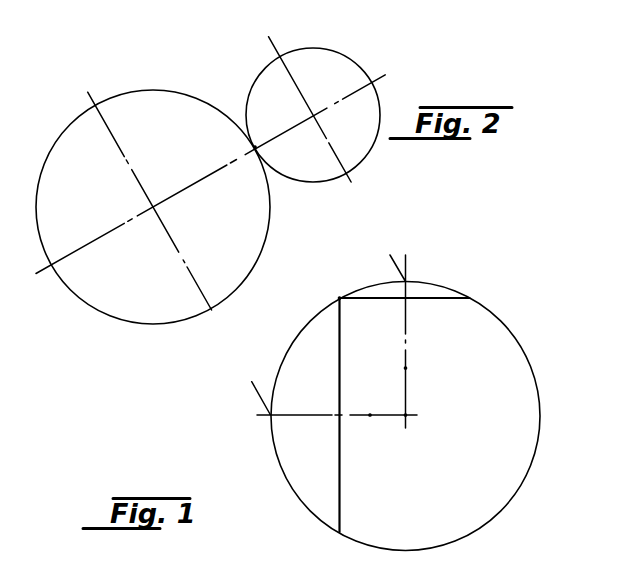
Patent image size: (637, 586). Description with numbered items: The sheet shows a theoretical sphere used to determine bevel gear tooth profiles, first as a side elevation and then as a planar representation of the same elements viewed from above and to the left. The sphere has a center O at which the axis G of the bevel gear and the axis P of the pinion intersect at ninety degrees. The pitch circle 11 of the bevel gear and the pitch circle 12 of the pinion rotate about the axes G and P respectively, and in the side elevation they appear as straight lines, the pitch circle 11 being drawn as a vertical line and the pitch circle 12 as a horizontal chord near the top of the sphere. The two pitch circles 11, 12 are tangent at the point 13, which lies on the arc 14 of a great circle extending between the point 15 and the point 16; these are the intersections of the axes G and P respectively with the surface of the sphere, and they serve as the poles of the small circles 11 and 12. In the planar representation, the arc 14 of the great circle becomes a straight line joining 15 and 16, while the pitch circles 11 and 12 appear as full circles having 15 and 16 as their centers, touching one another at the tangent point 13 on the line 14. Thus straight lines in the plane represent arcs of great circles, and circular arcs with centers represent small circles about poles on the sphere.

In FIG. 2, the pitch circle of the bevel gear 11 is at (260, 254).
In FIG. 1, the pitch circle of the bevel gear 11 is at (340, 506).
In FIG. 2, the pitch circle of the pinion 12 is at (309, 181).
In FIG. 1, the pitch circle of the pinion 12 is at (457, 300).
In FIG. 2, the tangent point 13 is at (257, 146).
In FIG. 1, the tangent point 13 is at (339, 298).
In FIG. 2, the arc of a great circle 14 is at (203, 178).
In FIG. 1, the arc of a great circle 14 is at (302, 329).
In FIG. 2, the intersection of axis G with the sphere surface 15 is at (151, 207).
In FIG. 1, the intersection of axis G with the sphere surface 15 is at (267, 420).
In FIG. 2, the intersection of axis P with the sphere surface 16 is at (314, 114).
In FIG. 1, the intersection of axis P with the sphere surface 16 is at (406, 281).
In FIG. 1, the axis of the pinion P is at (406, 368).
In FIG. 1, the center of the sphere O is at (407, 414).
In FIG. 1, the axis of the bevel gear G is at (370, 418).